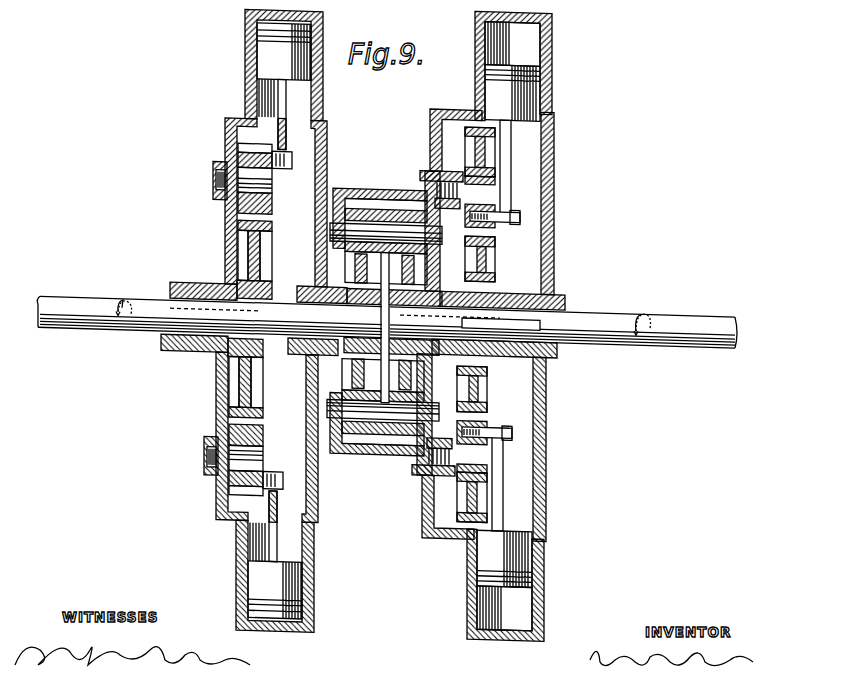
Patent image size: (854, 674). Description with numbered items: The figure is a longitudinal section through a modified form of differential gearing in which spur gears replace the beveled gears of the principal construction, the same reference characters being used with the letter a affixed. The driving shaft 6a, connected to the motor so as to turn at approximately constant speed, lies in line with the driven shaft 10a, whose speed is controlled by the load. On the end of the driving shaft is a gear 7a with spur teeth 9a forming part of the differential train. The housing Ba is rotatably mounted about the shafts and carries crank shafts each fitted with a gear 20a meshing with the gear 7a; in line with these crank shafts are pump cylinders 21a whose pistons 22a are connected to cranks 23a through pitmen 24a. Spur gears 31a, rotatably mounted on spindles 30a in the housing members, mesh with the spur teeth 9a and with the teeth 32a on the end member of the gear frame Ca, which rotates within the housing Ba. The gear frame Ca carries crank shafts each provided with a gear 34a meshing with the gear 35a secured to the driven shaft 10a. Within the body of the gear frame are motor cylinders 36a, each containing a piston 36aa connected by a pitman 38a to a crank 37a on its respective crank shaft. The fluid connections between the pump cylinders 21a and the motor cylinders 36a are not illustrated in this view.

The motor cylinder 36a is at (262, 70).
The piston 36aa is at (262, 47).
The pitman 38a is at (290, 98).
The gear frame Ca is at (228, 222).
The crank 37a is at (298, 152).
The gear 34a is at (272, 205).
The gear 35a is at (264, 256).
The spindle 30a is at (313, 255).
The teeth 32a is at (362, 228).
The spur gear 31a is at (400, 228).
The spur teeth 9a is at (415, 279).
The housing Ba is at (553, 206).
The pump cylinder 21a is at (535, 48).
The piston 22a is at (540, 91).
The pitman 24a is at (511, 156).
The gear 20a is at (468, 128).
The crank 23a is at (522, 217).
The gear 7a is at (486, 372).
The driven shaft 10a is at (100, 293).
The driving shaft 6a is at (680, 322).